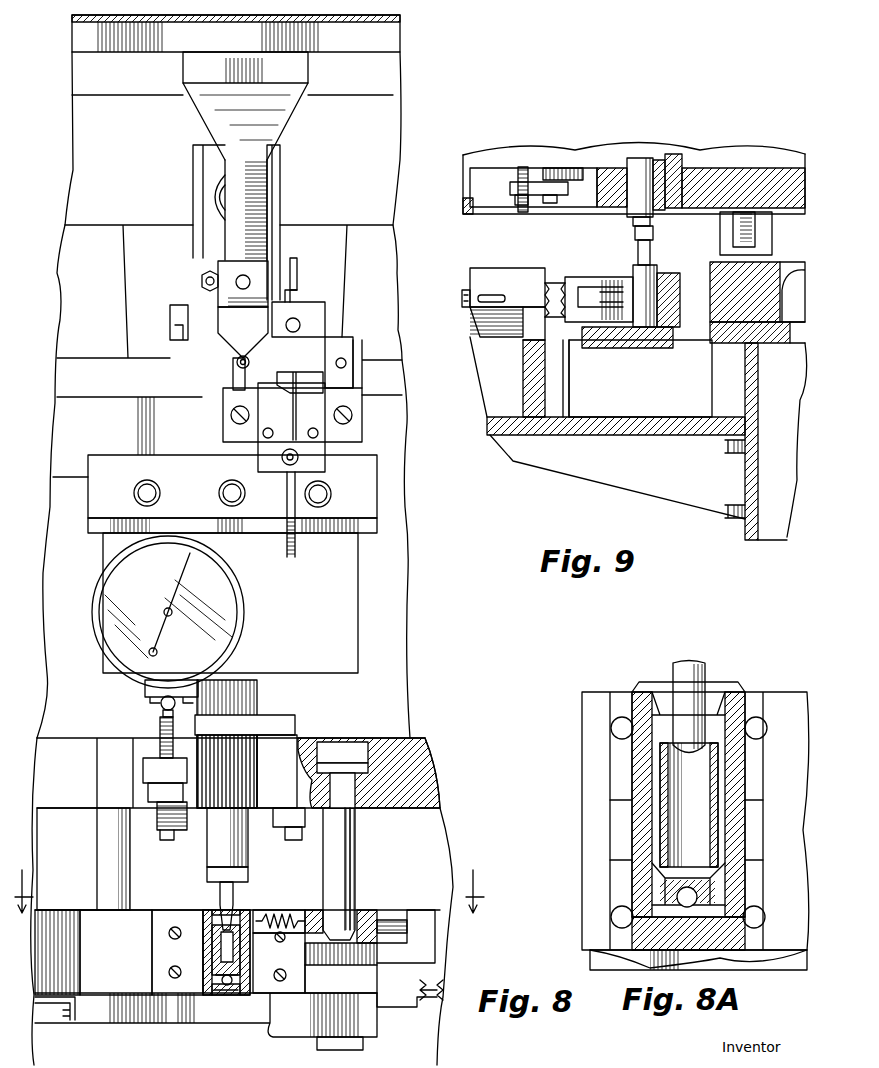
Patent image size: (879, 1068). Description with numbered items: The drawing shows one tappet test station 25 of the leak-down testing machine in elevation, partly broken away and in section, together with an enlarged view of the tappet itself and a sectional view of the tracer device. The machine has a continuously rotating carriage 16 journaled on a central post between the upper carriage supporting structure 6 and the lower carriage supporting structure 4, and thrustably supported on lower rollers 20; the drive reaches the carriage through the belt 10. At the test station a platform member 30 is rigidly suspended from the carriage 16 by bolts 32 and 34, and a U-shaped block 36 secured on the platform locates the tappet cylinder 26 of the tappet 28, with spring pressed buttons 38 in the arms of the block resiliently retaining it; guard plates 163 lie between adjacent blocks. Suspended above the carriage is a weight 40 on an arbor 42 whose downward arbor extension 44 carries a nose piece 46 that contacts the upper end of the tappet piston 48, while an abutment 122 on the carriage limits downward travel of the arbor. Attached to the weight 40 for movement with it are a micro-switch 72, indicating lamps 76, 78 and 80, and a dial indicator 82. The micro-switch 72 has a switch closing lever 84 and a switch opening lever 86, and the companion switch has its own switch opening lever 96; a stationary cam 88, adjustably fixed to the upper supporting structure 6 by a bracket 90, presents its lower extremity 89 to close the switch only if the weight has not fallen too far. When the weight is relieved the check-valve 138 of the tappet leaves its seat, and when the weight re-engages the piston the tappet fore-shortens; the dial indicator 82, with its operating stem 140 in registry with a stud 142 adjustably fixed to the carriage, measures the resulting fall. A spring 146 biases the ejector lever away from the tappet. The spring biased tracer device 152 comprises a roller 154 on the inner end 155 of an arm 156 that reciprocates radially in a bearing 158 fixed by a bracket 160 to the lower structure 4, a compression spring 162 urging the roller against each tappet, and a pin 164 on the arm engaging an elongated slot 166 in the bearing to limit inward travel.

In FIG. 9, the lower carriage supporting structure 4 is at (762, 273).
In FIG. 8, the upper carriage supporting structure 6 is at (387, 42).
In FIG. 8, the belt 10 is at (249, 912).
In FIG. 8, the carriage 16 is at (412, 752).
In FIG. 9, the carriage 16 is at (698, 165).
In FIG. 9, the lower rollers 20 is at (748, 233).
In FIG. 8, the tappet test station 25 is at (101, 676).
In FIG. 8, the tappet cylinder 26 is at (245, 958).
In FIG. 8A, the tappet cylinder 26 is at (745, 822).
In FIG. 8, the tappet 28 is at (223, 1007).
In FIG. 9, the tappet 28 is at (641, 348).
In FIG. 8A, the tappet 28 is at (630, 680).
In FIG. 8, the platform member 30 is at (360, 1022).
In FIG. 9, the platform member 30 is at (597, 348).
In FIG. 8A, the platform member 30 is at (758, 962).
In FIG. 8, the bolt 32 is at (105, 833).
In FIG. 9, the bolt 32 is at (650, 245).
In FIG. 8, the bolt 34 is at (350, 853).
In FIG. 8, the U-shaped block 36 is at (88, 918).
In FIG. 8A, the U-shaped block 36 is at (595, 768).
In FIG. 8, the spring pressed buttons 38 is at (210, 918).
In FIG. 8A, the spring pressed buttons 38 is at (612, 725).
In FIG. 8, the weight 40 is at (340, 578).
In FIG. 8, the arbor 42 is at (268, 203).
In FIG. 8, the arbor extension 44 is at (213, 850).
In FIG. 9, the arbor extension 44 is at (638, 158).
In FIG. 8, the nose piece 46 is at (233, 925).
In FIG. 9, the nose piece 46 is at (646, 253).
In FIG. 8A, the nose piece 46 is at (705, 682).
In FIG. 8, the tappet piston 48 is at (205, 957).
In FIG. 8A, the tappet piston 48 is at (660, 832).
In FIG. 8, the micro-switch 72 is at (340, 345).
In FIG. 8, the indicating lamp 76 is at (143, 485).
In FIG. 8, the indicating lamp 78 is at (227, 485).
In FIG. 8, the indicating lamp 80 is at (326, 487).
In FIG. 8, the dial indicator 82 is at (118, 592).
In FIG. 8, the switch closing lever 84 is at (233, 367).
In FIG. 8, the switch opening lever 86 is at (293, 372).
In FIG. 8, the stationary cam 88 is at (218, 300).
In FIG. 8, the lower extremity of cam 89 is at (250, 358).
In FIG. 8, the bracket 90 is at (275, 125).
In FIG. 8, the switch opening lever 96 is at (297, 268).
In FIG. 9, the abutment 122 is at (674, 154).
In FIG. 8, the check-valve 138 is at (230, 990).
In FIG. 8A, the check-valve 138 is at (688, 886).
In FIG. 8, the operating stem 140 is at (160, 704).
In FIG. 8, the stud 142 is at (158, 735).
In FIG. 9, the stud 142 is at (521, 167).
In FIG. 8, the spring 146 is at (35, 995).
In FIG. 9, the spring biased tracer device 152 is at (598, 277).
In FIG. 9, the roller 154 is at (614, 287).
In FIG. 9, the inner end of arm 155 is at (556, 283).
In FIG. 9, the arm 156 is at (463, 290).
In FIG. 9, the bearing 158 is at (492, 268).
In FIG. 9, the bracket 160 is at (552, 435).
In FIG. 9, the compression spring 162 is at (565, 340).
In FIG. 8, the guard plates 163 is at (420, 918).
In FIG. 9, the pin 164 is at (500, 295).
In FIG. 9, the elongated slot 166 is at (478, 312).